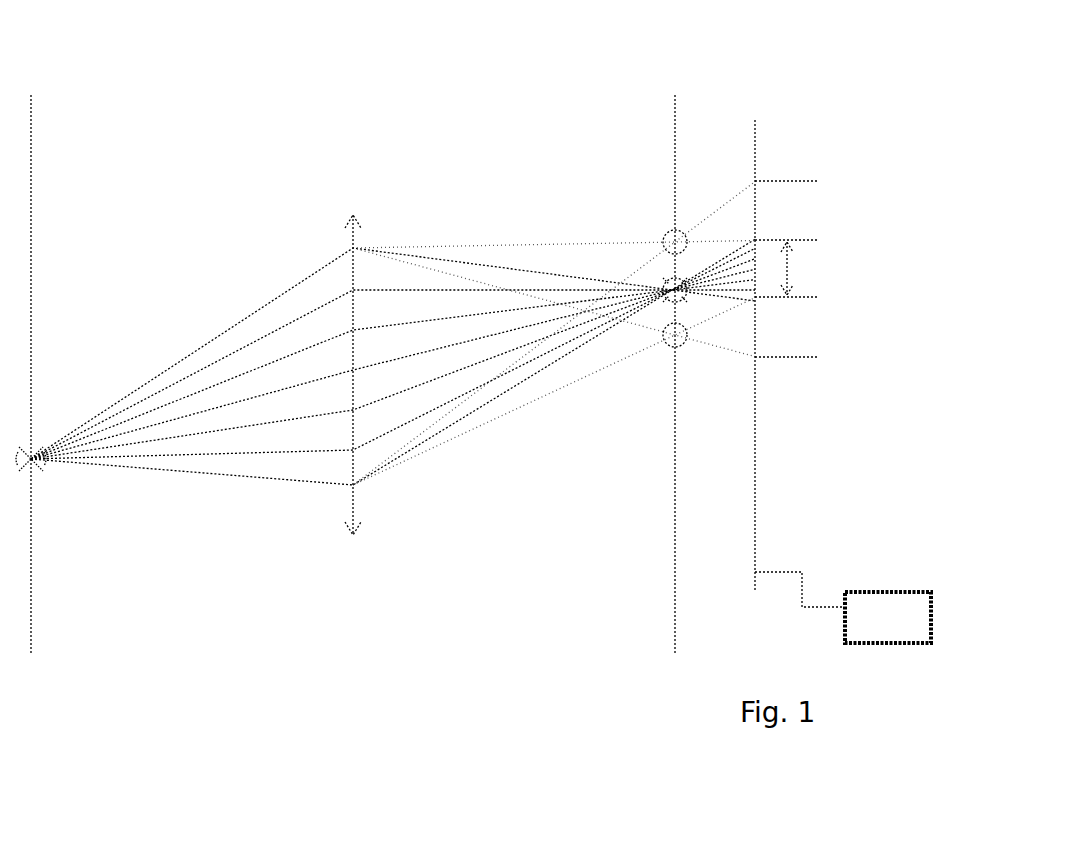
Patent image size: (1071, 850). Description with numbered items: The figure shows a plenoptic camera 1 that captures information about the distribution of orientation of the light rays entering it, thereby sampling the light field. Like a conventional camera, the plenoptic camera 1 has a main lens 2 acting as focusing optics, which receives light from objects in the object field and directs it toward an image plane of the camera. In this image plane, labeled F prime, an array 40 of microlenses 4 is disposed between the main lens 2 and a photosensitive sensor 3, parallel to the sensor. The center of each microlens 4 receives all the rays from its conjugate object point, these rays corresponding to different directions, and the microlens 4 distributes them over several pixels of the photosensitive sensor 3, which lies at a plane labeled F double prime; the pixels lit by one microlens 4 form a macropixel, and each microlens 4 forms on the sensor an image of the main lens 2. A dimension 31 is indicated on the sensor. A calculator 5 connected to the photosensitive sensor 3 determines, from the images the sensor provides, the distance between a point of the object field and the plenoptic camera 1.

The plenoptic camera 1 is at (473, 416).
The main lens 2 is at (354, 247).
The photosensitive sensor 3 is at (791, 310).
The detector pixel pitch 31 is at (789, 268).
The microlens 4 is at (668, 233).
The array of microlenses 40 is at (663, 364).
The calculator 5 is at (848, 588).